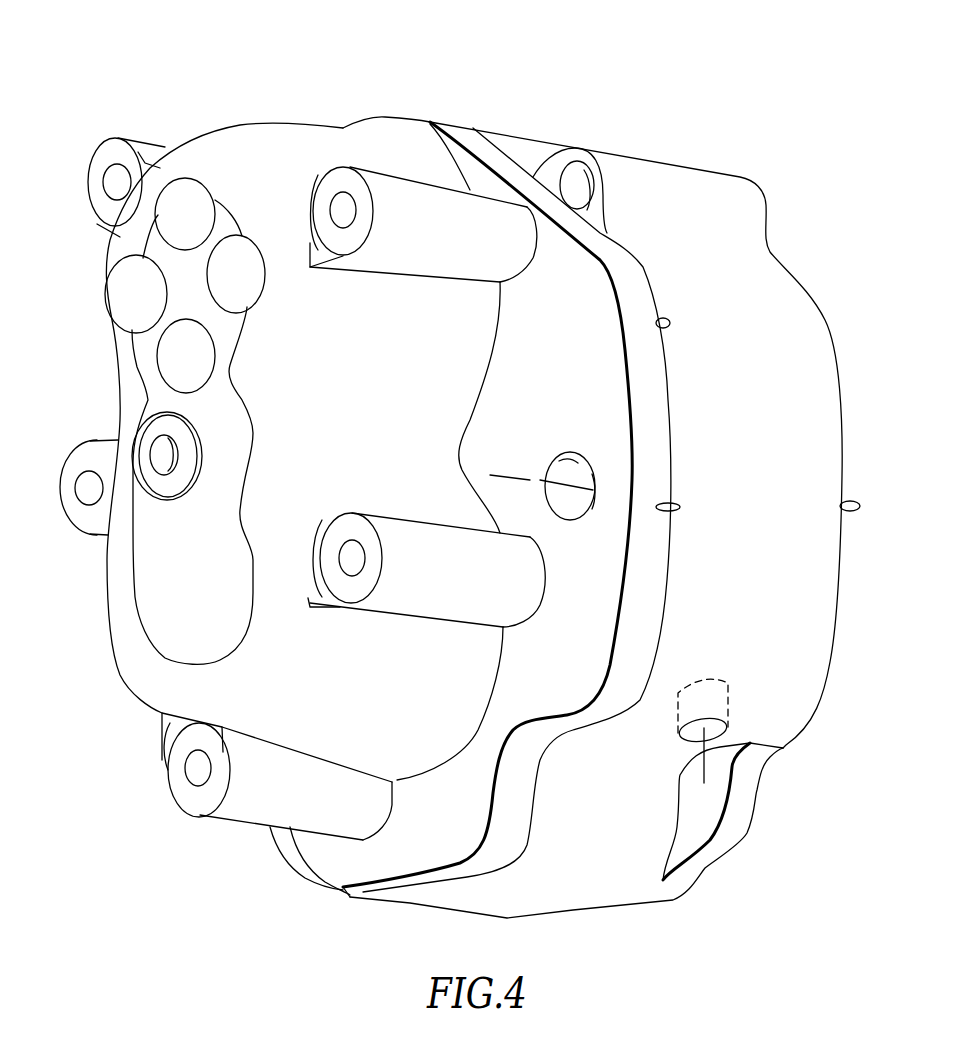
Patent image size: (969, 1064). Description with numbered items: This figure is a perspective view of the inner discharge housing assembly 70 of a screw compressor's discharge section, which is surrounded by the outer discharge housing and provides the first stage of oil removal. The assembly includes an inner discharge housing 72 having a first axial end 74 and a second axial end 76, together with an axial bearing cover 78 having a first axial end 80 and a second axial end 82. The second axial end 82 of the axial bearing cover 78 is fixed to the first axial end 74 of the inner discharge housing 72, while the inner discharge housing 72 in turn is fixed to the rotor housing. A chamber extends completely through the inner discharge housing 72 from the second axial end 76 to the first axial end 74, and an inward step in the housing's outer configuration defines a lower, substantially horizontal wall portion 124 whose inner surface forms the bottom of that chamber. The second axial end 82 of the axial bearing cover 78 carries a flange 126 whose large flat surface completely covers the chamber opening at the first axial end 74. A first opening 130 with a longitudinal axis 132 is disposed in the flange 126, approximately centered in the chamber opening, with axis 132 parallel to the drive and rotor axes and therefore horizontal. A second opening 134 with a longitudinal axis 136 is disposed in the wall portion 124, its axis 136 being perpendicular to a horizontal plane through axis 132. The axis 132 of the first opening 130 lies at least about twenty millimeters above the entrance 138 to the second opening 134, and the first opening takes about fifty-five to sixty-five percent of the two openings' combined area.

The inner discharge housing assembly 70 is at (428, 46).
The inner discharge housing 72 is at (620, 150).
The first axial end 74 is at (672, 507).
The second axial end 76 is at (847, 507).
The axial bearing cover 78 is at (280, 124).
The first axial end 80 is at (160, 395).
The second axial end 82 is at (660, 326).
The wall portion 124 is at (597, 740).
The flange 126 is at (657, 383).
The first opening 130 is at (570, 452).
The longitudinal axis 132 is at (508, 473).
The second opening 134 is at (727, 730).
The longitudinal axis 136 is at (703, 777).
The entrance 138 is at (703, 677).